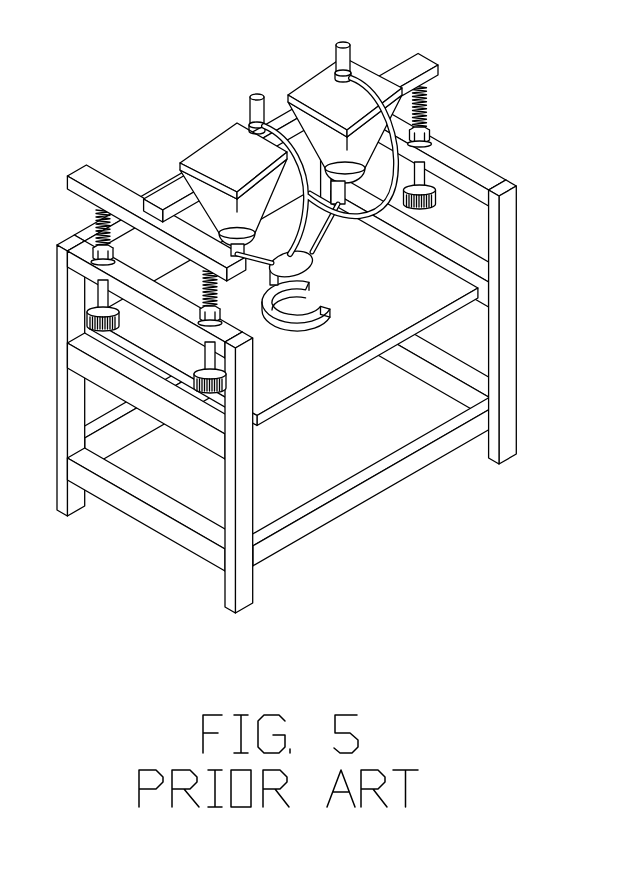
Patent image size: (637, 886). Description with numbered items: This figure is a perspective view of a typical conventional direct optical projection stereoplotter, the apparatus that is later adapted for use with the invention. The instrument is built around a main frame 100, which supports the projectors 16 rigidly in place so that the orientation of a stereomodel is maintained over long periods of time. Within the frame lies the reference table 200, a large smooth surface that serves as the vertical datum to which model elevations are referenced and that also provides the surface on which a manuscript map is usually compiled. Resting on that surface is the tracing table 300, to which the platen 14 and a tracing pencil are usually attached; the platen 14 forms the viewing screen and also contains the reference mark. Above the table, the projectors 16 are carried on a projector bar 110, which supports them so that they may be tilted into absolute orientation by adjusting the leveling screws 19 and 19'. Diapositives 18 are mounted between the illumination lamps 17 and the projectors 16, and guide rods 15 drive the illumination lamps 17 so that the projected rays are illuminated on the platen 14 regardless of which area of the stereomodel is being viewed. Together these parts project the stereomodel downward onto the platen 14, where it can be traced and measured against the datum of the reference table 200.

The main frame 100 is at (258, 491).
The reference table 200 is at (331, 389).
The tracing table 300 is at (337, 302).
The projector bar 110 is at (137, 186).
The leveling screw 19 is at (437, 156).
The leveling screw 19' is at (156, 301).
The diapositive 18 is at (214, 132).
The illumination lamp 17 is at (347, 40).
The projector 16 is at (315, 155).
The guide rod 15 is at (321, 241).
The platen 14 is at (316, 266).